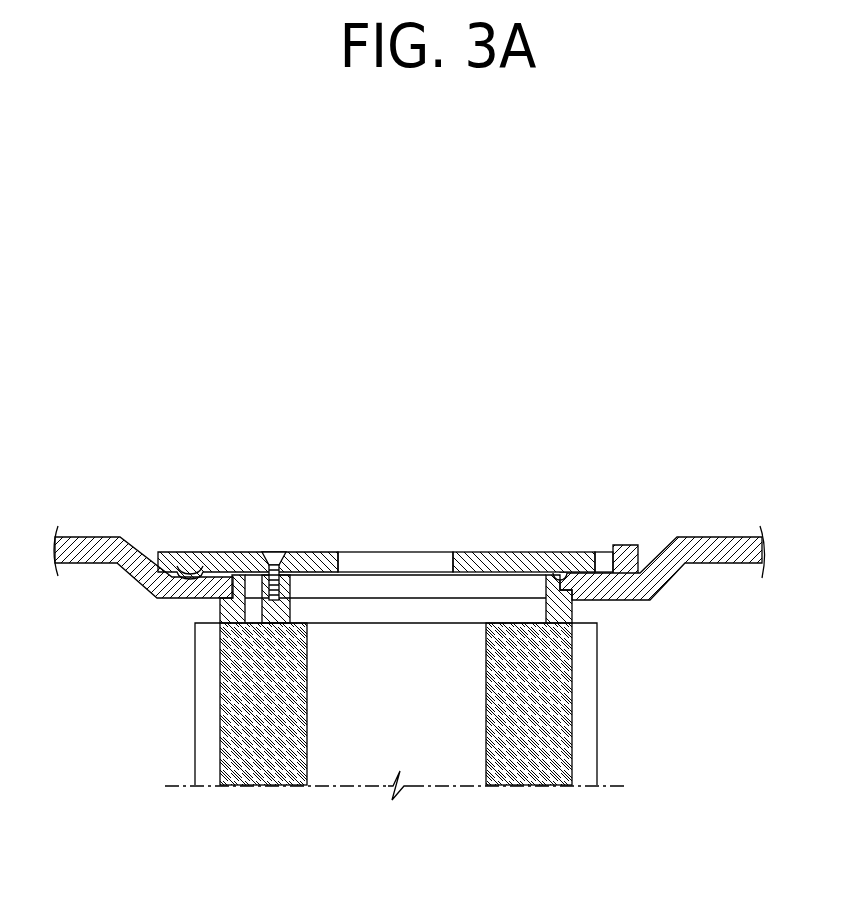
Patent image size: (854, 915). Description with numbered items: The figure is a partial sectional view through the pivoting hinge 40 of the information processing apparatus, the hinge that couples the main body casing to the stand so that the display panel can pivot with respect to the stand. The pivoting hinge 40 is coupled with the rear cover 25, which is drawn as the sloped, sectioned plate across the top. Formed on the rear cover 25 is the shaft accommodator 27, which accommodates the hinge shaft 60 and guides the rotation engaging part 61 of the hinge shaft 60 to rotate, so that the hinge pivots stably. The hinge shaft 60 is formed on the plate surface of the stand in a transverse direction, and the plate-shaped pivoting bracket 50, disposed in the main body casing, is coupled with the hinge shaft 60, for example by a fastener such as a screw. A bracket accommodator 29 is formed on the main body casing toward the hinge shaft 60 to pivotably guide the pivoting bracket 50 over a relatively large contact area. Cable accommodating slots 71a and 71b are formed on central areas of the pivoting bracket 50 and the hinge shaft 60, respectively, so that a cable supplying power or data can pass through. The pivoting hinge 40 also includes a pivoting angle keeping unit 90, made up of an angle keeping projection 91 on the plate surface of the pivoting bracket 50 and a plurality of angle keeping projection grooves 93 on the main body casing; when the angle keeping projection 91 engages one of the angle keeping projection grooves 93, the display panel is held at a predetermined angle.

The rear cover 25 is at (718, 537).
The shaft accommodator 27 is at (530, 552).
The bracket accommodator 29 is at (312, 552).
The pivoting hinge 40 is at (72, 613).
The pivoting bracket 50 is at (158, 577).
The hinge shaft 60 is at (217, 624).
The rotation engaging part 61 is at (600, 552).
The cable accommodating slot 71a is at (442, 558).
The cable accommodating slot 71b is at (485, 730).
The pivoting angle keeping unit 90 is at (165, 455).
The angle keeping projection 91 is at (180, 552).
The angle keeping projection grooves 93 is at (226, 552).